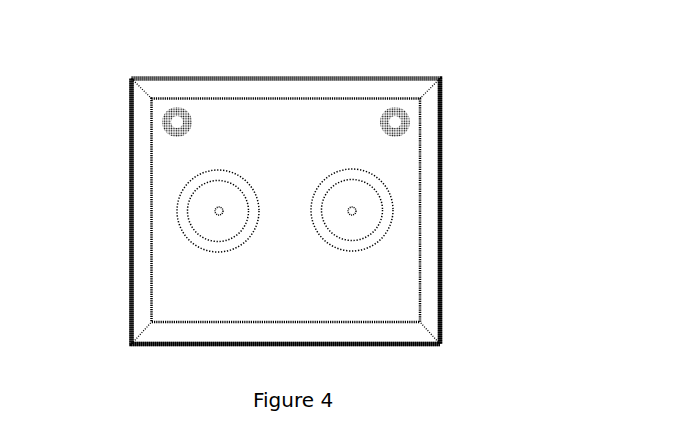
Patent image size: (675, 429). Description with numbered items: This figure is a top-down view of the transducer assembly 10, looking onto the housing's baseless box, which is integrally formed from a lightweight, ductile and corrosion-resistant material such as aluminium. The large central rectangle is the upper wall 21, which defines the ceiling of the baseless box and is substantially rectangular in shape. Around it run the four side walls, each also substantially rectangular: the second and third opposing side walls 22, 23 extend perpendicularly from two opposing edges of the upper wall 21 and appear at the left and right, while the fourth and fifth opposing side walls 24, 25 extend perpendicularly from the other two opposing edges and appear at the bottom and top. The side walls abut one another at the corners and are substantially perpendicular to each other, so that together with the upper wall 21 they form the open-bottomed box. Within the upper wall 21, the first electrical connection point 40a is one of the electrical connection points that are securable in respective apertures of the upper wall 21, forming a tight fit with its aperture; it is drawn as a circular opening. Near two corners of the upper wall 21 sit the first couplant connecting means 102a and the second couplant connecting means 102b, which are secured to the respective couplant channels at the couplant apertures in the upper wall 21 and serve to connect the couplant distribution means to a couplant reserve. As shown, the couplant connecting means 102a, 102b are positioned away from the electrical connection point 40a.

The audio device housing 10 is at (294, 204).
The upper wall 21 is at (303, 130).
The second side wall 22 is at (130, 271).
The third side wall 23 is at (444, 267).
The fourth side wall 24 is at (359, 347).
The fifth side wall 25 is at (317, 77).
The first electrical connection point 40a is at (170, 203).
The first couplant connecting means 102a is at (160, 119).
The second couplant connecting means 102b is at (416, 117).